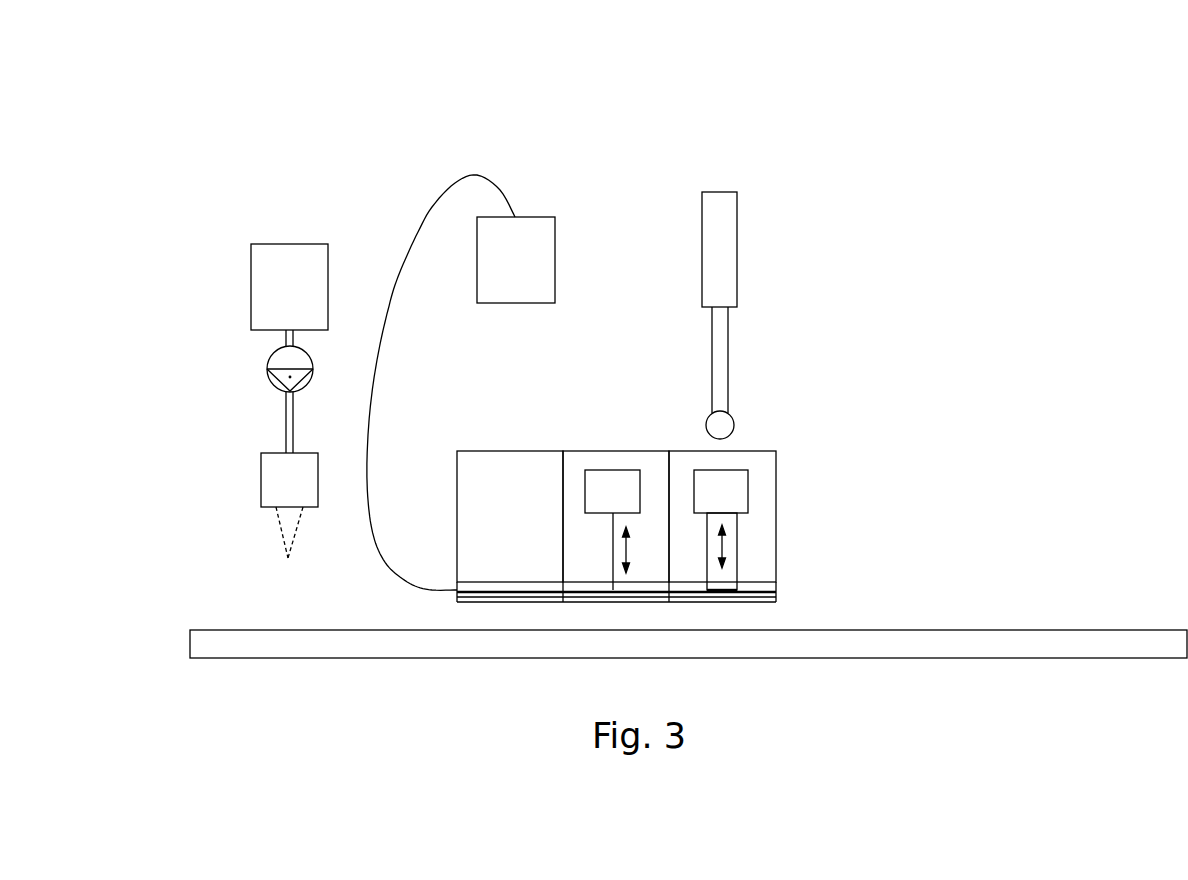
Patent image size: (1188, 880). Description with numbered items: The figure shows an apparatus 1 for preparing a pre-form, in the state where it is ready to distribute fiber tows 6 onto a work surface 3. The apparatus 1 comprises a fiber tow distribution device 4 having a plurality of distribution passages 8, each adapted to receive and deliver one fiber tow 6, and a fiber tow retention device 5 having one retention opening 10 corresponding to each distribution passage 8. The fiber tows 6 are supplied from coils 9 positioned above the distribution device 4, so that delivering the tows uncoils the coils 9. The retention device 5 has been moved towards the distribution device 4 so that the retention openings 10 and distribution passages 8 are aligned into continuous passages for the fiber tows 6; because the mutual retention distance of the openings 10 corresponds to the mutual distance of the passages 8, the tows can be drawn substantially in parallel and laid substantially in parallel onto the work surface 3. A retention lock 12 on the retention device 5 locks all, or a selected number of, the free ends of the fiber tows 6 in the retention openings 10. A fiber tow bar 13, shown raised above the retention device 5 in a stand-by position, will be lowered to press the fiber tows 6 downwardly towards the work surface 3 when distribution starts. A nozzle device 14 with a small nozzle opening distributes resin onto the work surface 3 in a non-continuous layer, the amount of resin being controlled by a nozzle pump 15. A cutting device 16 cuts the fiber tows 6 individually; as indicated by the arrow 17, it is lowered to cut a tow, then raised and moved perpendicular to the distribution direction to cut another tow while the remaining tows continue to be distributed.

The apparatus 1 is at (919, 176).
The work surface 3 is at (915, 640).
The fiber tow distribution device 4 is at (483, 472).
The fiber tow retention device 5 is at (763, 499).
The fiber tows 6 is at (421, 333).
The distribution passages 8 is at (462, 587).
The coils 9 is at (533, 233).
The retention openings 10 is at (772, 585).
The retention lock 12 is at (681, 472).
The fiber tow bar 13 is at (764, 315).
The nozzle device 14 is at (252, 505).
The nozzle pump 15 is at (282, 367).
The cutting device 16 is at (573, 472).
The arrow 17 is at (627, 553).